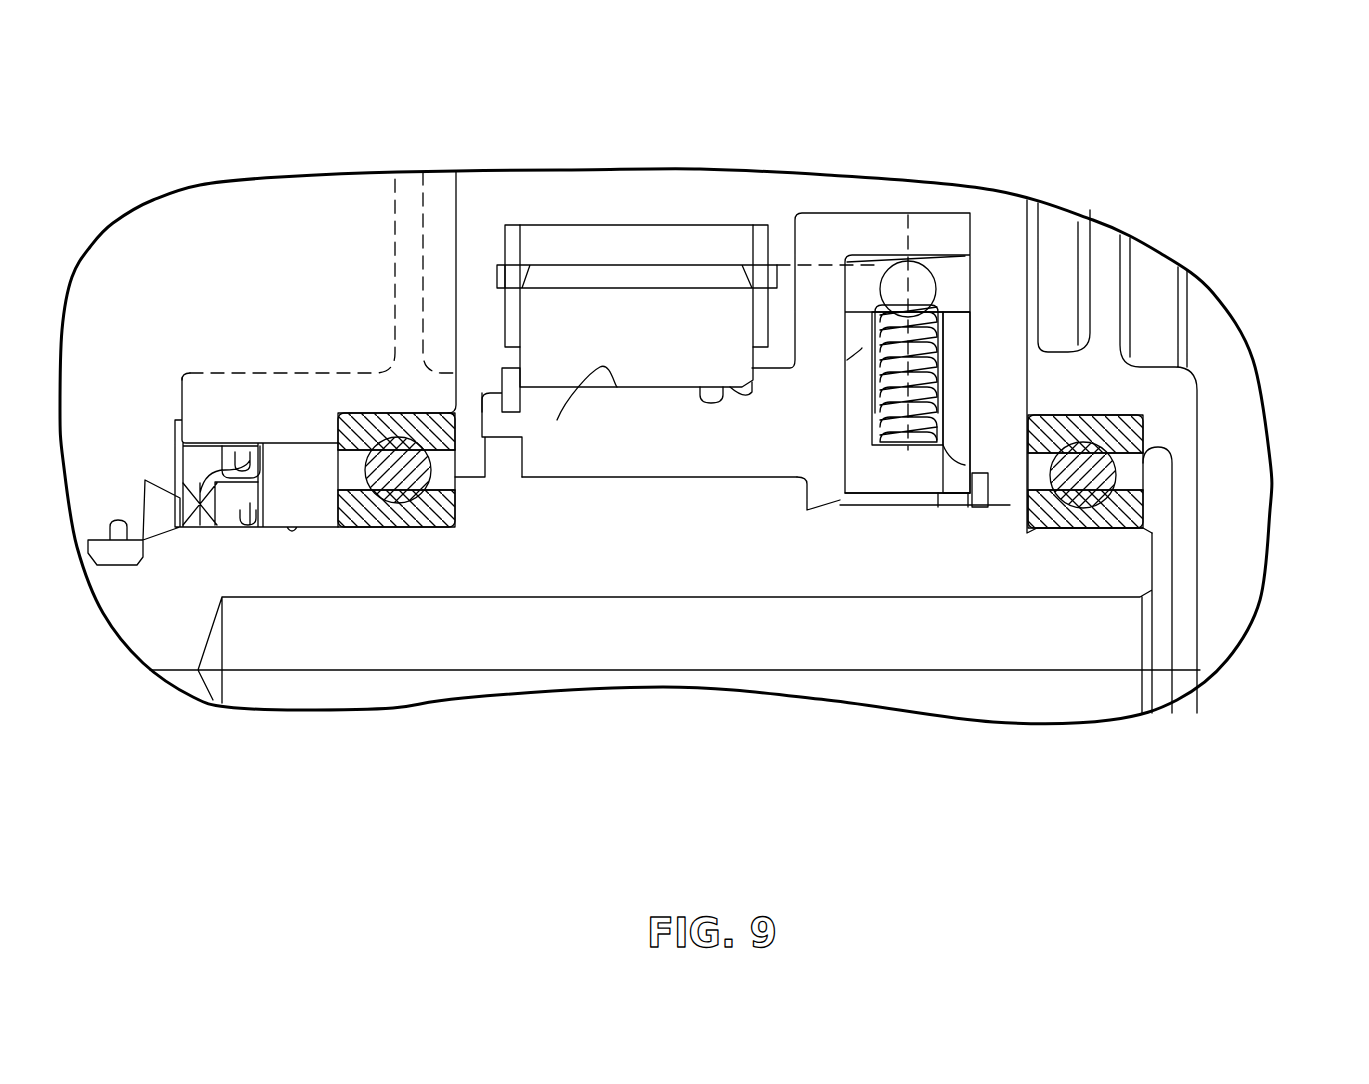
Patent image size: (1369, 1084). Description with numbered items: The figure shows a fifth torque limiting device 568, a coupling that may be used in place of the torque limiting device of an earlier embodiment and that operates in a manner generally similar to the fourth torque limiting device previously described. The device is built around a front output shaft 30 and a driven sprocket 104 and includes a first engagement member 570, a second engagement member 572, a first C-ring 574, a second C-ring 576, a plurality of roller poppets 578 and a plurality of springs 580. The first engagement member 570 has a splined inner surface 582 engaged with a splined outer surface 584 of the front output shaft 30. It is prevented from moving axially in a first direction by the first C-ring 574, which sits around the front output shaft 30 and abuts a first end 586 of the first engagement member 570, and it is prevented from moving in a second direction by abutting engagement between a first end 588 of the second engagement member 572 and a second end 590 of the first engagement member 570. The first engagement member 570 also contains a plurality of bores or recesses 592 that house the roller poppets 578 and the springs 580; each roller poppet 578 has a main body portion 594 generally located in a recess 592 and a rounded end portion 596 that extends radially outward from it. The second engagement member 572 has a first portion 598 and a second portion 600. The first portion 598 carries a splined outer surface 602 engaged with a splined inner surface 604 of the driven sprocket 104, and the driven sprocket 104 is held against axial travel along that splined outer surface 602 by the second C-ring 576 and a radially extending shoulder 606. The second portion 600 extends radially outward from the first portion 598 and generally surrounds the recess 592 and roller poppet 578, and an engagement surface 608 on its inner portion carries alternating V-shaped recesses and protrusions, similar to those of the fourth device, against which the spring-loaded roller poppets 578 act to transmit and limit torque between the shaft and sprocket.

The front output shaft 30 is at (568, 565).
The driven sprocket 104 is at (580, 307).
The fifth torque limiting device 568 is at (777, 194).
The first engagement member 570 is at (958, 367).
The second engagement member 572 is at (772, 453).
The first C-ring 574 is at (980, 505).
The second C-ring 576 is at (512, 387).
The roller poppets 578 is at (940, 350).
The springs 580 is at (938, 497).
The splined inner surface 582 is at (968, 500).
The splined outer surface 584 is at (900, 427).
The first end 586 is at (973, 430).
The first end 588 is at (847, 360).
The second end 590 is at (847, 500).
The recesses 592 is at (937, 427).
The main body portion 594 is at (940, 387).
The rounded end portion 596 is at (925, 288).
The first portion 598 is at (637, 433).
The second portion 600 is at (873, 232).
The splined outer surface 602 is at (557, 420).
The splined inner surface 604 is at (723, 393).
The radially extending shoulder 606 is at (765, 382).
The engagement surface 608 is at (938, 260).